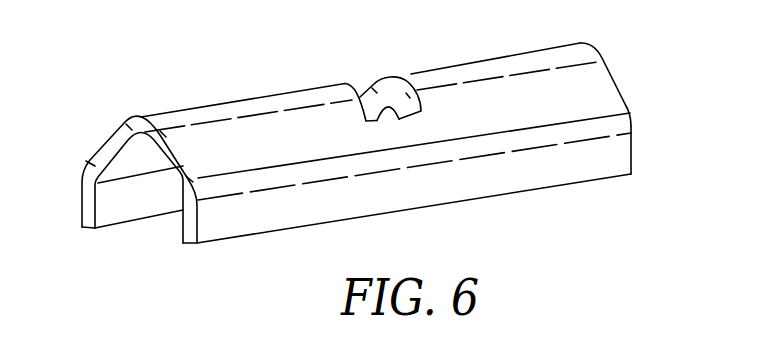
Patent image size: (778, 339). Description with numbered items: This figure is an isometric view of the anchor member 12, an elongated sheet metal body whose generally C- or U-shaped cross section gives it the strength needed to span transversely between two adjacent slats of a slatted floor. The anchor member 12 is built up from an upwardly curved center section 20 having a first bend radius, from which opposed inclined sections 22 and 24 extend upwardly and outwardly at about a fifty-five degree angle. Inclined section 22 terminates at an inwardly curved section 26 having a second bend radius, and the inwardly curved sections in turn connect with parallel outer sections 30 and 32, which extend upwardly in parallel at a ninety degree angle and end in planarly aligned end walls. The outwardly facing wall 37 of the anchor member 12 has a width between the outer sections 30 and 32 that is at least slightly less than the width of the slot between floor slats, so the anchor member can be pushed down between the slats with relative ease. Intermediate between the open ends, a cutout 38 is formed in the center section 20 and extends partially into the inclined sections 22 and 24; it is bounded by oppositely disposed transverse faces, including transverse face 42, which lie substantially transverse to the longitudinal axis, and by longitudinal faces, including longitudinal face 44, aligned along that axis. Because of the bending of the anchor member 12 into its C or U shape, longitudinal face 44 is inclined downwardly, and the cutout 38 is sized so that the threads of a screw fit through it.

The anchor member 12 is at (634, 198).
The curved center section 20 is at (497, 67).
The inclined section 22 is at (597, 83).
The inclined section 24 is at (112, 153).
The inwardly curved section 26 is at (620, 122).
The outer section 30 is at (279, 218).
The outer section 32 is at (135, 197).
The outwardly facing wall 37 is at (203, 135).
The cutout 38 is at (355, 93).
The transverse face 42 is at (377, 80).
The longitudinal face 44 is at (378, 122).